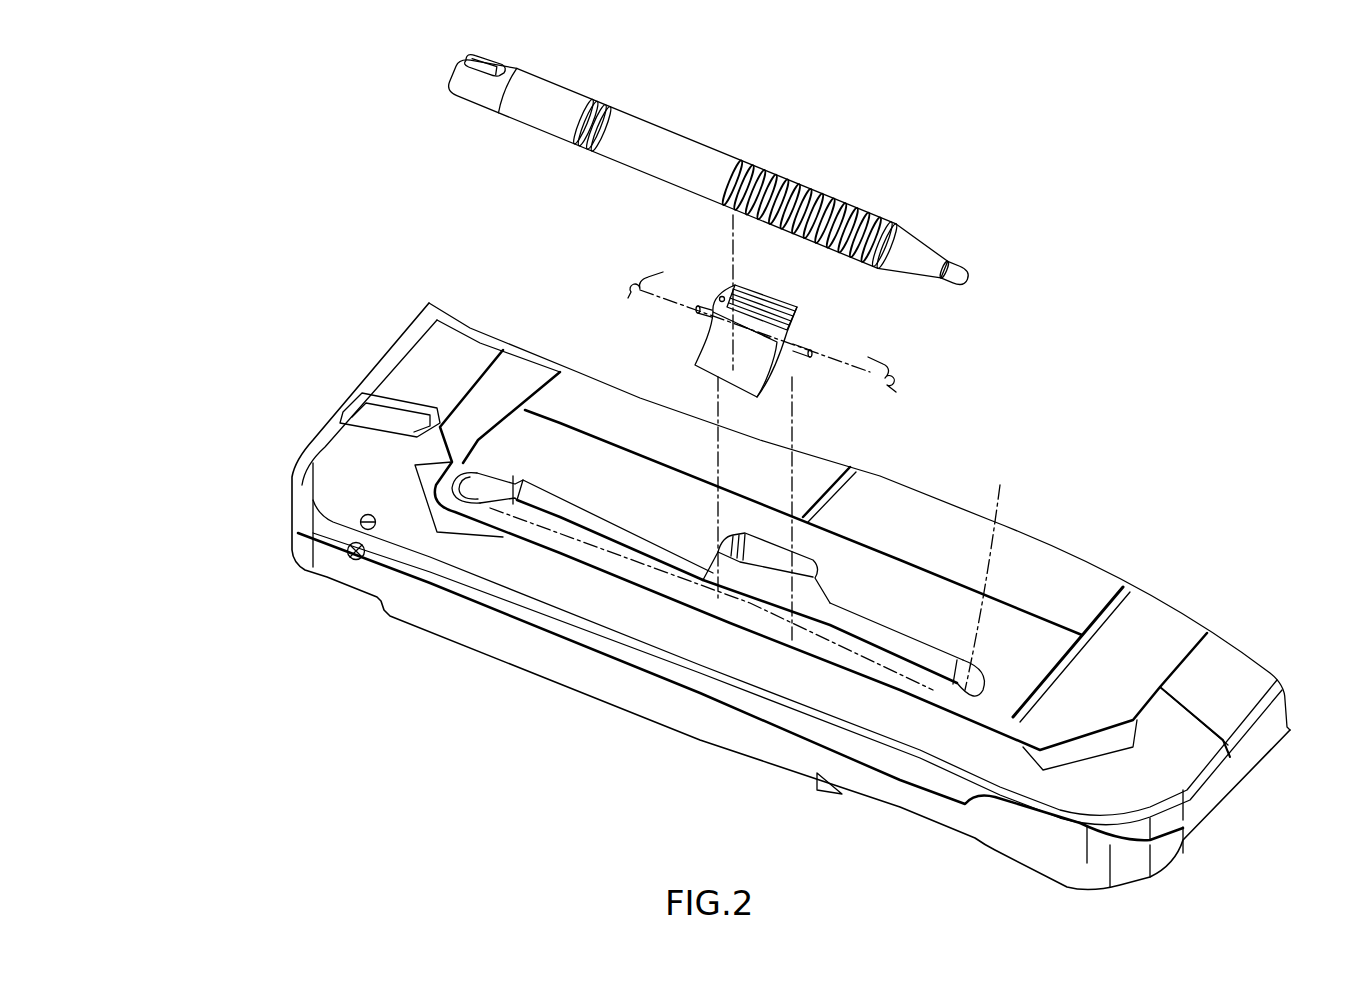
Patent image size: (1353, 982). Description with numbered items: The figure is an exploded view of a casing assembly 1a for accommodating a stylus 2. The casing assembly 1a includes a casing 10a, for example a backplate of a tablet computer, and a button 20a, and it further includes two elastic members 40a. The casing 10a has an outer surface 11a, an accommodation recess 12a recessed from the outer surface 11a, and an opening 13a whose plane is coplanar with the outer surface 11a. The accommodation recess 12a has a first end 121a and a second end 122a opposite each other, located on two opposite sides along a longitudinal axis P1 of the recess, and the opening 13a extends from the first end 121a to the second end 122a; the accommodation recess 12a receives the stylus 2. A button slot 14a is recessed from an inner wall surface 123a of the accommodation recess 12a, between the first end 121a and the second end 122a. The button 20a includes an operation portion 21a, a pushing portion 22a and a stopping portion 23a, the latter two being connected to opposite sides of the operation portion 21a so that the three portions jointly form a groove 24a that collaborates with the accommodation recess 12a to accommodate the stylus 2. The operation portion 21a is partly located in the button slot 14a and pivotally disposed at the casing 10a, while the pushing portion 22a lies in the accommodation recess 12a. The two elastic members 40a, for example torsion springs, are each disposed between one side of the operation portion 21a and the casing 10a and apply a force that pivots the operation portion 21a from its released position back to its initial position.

The casing assembly 1a is at (765, 552).
The stylus 2 is at (678, 150).
The casing 10a is at (668, 665).
The outer surface 11a is at (603, 498).
The accommodation recess 12a is at (898, 655).
The opening 13a is at (505, 480).
The button slot 14a is at (762, 570).
The button 20a is at (744, 333).
The operation portion 21a is at (782, 288).
The pushing portion 22a is at (700, 352).
The stopping portion 23a is at (722, 297).
The groove 24a is at (722, 343).
The elastic member 40a is at (633, 270).
The first end 121a is at (455, 492).
The second end 122a is at (1030, 650).
The inner wall surface 123a is at (862, 650).
The longitudinal axis P1 is at (991, 575).